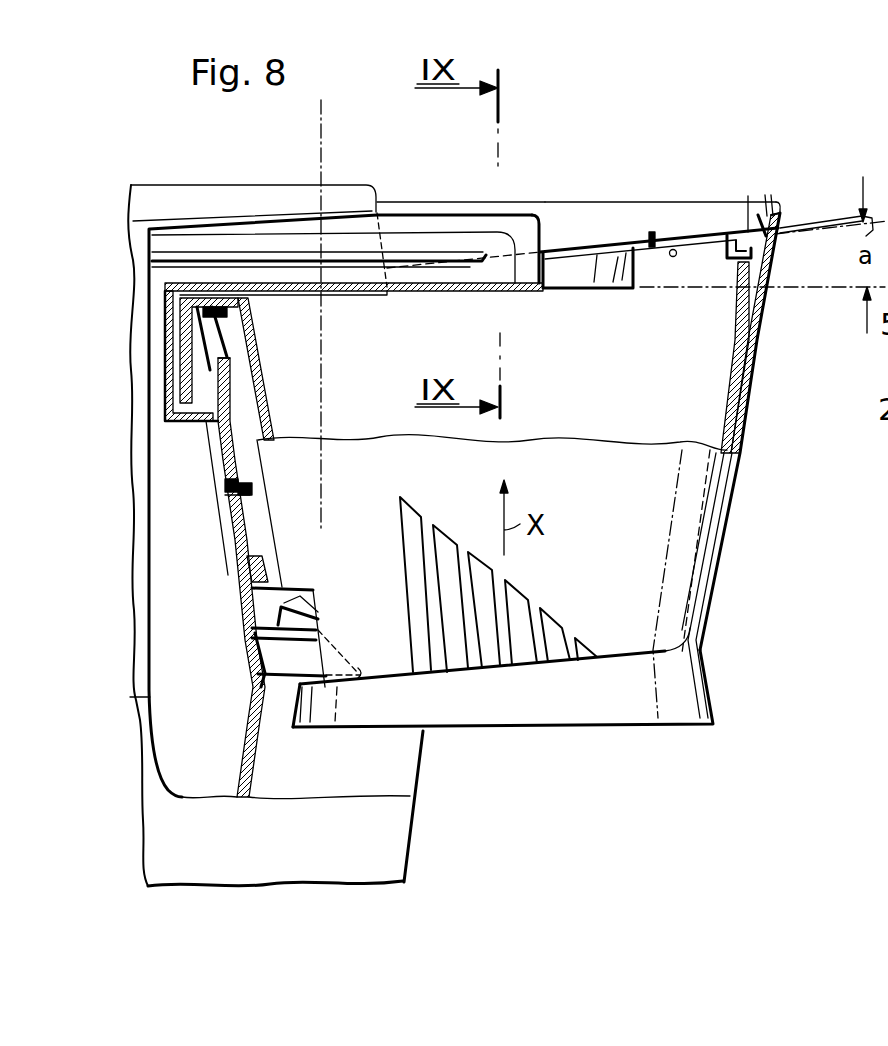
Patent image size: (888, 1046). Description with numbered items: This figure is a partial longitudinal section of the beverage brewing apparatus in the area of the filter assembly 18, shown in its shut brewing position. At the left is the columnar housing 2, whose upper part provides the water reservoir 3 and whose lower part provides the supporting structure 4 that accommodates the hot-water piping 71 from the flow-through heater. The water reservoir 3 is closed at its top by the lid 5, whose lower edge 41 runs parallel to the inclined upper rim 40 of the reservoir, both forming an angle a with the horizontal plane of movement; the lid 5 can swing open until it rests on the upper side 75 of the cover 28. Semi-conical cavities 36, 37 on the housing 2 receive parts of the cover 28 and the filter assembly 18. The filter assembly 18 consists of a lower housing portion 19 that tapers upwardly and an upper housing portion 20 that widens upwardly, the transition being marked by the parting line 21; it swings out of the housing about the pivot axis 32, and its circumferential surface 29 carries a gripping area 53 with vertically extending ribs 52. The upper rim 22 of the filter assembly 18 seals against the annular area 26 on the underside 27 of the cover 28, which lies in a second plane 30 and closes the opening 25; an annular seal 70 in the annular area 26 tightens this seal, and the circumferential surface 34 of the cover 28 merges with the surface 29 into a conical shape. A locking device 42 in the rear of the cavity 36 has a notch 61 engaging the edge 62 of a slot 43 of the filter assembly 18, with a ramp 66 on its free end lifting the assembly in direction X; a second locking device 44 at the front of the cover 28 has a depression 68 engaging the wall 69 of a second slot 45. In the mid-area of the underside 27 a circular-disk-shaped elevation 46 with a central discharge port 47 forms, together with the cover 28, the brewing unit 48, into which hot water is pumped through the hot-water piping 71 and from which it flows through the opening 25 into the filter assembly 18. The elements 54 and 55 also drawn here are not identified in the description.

The columnar housing 2 is at (420, 814).
The water reservoir 3 is at (140, 213).
The supporting structure 4 is at (383, 851).
The lid 5 is at (180, 200).
The filter assembly 18 is at (730, 559).
The lower housing portion 19 is at (700, 691).
The upper housing portion 20 is at (723, 504).
The parting line 21 is at (663, 651).
The upper rim 22 is at (743, 247).
The opening 25 is at (652, 250).
The annular area 26 is at (770, 240).
The underside 27 is at (673, 247).
The cover 28 is at (571, 213).
The circumferential surface 29 is at (740, 442).
The second plane 30 is at (853, 208).
The pivot axis 32 is at (328, 117).
The circumferential surface 34 is at (782, 205).
The cavity 36 is at (262, 608).
The cavity 37 is at (270, 748).
The upper rim 40 is at (237, 213).
The lower edge 41 is at (276, 218).
The locking device 42 is at (248, 488).
The slot 43 is at (232, 497).
The second locking device 44 is at (763, 267).
The second slot 45 is at (737, 266).
The elevation 46 is at (597, 258).
The central discharge port 47 is at (500, 283).
The brewing unit 48 is at (536, 205).
The ribs 52 is at (537, 655).
The gripping area 53 is at (487, 657).
The sealing strip 54 is at (339, 299).
The block 55 is at (641, 275).
The notch 61 is at (238, 472).
The upper edge 62 is at (252, 494).
The ramp 66 is at (245, 490).
The second depression 68 is at (741, 236).
The wall 69 is at (741, 290).
The annular seal 70 is at (784, 230).
The hot-water piping 71 is at (428, 238).
The upper side 75 is at (470, 203).